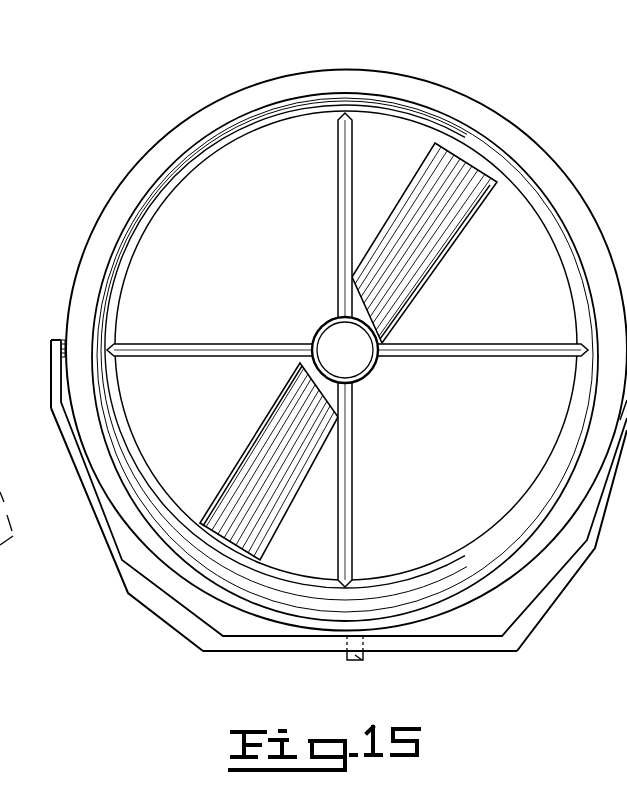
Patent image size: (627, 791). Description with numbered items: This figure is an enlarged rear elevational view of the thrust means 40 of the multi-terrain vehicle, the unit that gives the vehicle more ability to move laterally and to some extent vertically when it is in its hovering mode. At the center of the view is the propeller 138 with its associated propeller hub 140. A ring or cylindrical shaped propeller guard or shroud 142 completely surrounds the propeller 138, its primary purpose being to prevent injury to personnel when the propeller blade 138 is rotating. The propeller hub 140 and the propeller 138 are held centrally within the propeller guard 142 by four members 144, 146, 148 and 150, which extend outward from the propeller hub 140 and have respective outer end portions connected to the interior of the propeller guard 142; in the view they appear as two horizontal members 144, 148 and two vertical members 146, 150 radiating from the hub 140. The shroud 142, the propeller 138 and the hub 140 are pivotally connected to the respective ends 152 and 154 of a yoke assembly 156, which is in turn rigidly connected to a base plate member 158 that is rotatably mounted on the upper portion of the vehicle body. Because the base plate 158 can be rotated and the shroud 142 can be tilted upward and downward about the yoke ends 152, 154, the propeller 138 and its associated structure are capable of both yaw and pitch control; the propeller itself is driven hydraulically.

The thrust means 40 is at (302, 71).
The propeller 138 is at (462, 232).
The propeller hub 140 is at (318, 333).
The propeller guard 142 is at (473, 100).
The member 144 is at (197, 322).
The member 146 is at (336, 205).
The member 148 is at (490, 343).
The member 150 is at (355, 487).
The yoke assembly end 152 is at (60, 338).
The yoke assembly end 154 is at (626, 333).
The yoke assembly 156 is at (556, 573).
The base plate member 158 is at (298, 652).